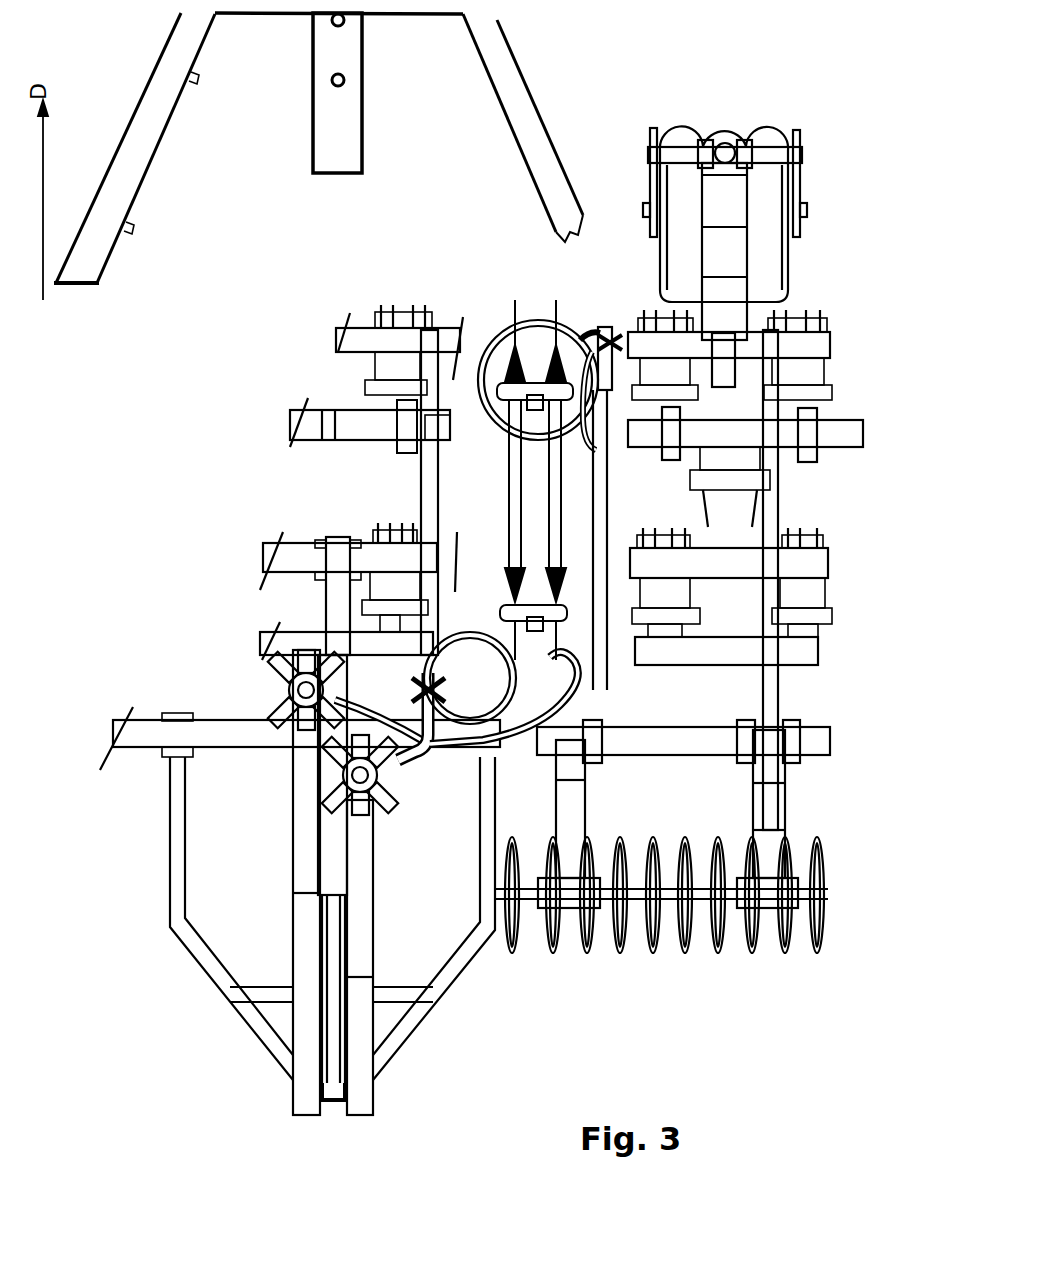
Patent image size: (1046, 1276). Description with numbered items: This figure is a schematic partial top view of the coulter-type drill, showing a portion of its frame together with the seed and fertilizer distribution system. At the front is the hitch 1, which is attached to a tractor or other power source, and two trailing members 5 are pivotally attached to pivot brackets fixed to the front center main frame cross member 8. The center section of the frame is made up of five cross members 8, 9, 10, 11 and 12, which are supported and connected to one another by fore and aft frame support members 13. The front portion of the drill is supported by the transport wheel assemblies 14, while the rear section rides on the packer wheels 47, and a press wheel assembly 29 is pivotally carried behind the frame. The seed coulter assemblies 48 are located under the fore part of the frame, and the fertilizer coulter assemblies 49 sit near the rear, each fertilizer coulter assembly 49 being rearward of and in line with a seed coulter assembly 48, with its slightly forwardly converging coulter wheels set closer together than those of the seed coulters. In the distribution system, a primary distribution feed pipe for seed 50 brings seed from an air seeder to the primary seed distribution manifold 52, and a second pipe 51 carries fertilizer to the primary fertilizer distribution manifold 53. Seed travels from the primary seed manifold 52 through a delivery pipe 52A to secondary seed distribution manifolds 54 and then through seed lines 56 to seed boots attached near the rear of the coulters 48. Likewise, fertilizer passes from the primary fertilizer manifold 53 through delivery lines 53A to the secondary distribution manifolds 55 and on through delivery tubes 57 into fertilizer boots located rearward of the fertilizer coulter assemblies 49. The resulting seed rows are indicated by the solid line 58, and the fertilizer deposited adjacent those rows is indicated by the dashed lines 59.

The hitch 1 is at (368, 100).
The trailing members 5 is at (530, 90).
The front center main frame cross member 8 is at (372, 345).
The cross member 9 is at (372, 428).
The cross member 10 is at (376, 560).
The cross member 11 is at (300, 640).
The cross member 12 is at (245, 738).
The fore and aft frame support members 13 is at (770, 705).
The transport wheel assemblies 14 is at (790, 255).
The press wheel assembly 29 is at (803, 842).
The packer wheels 47 is at (813, 947).
The seed coulter assemblies 48 is at (762, 500).
The fertilizer coulter assemblies 49 is at (823, 627).
The primary distribution feed pipe for seed 50 is at (300, 1098).
The second pipe 51 is at (367, 1105).
The primary seed distribution manifold 52 is at (272, 688).
The delivery pipe 52A is at (600, 535).
The primary fertilizer distribution manifold 53 is at (395, 802).
The delivery lines 53A is at (430, 762).
The secondary seed distribution manifolds 54 is at (600, 325).
The secondary distribution manifolds 55 is at (416, 692).
The seed lines 56 is at (487, 325).
The delivery tubes 57 is at (483, 640).
The seed rows 58 is at (597, 693).
The fertilizer deposit lines 59 is at (548, 823).